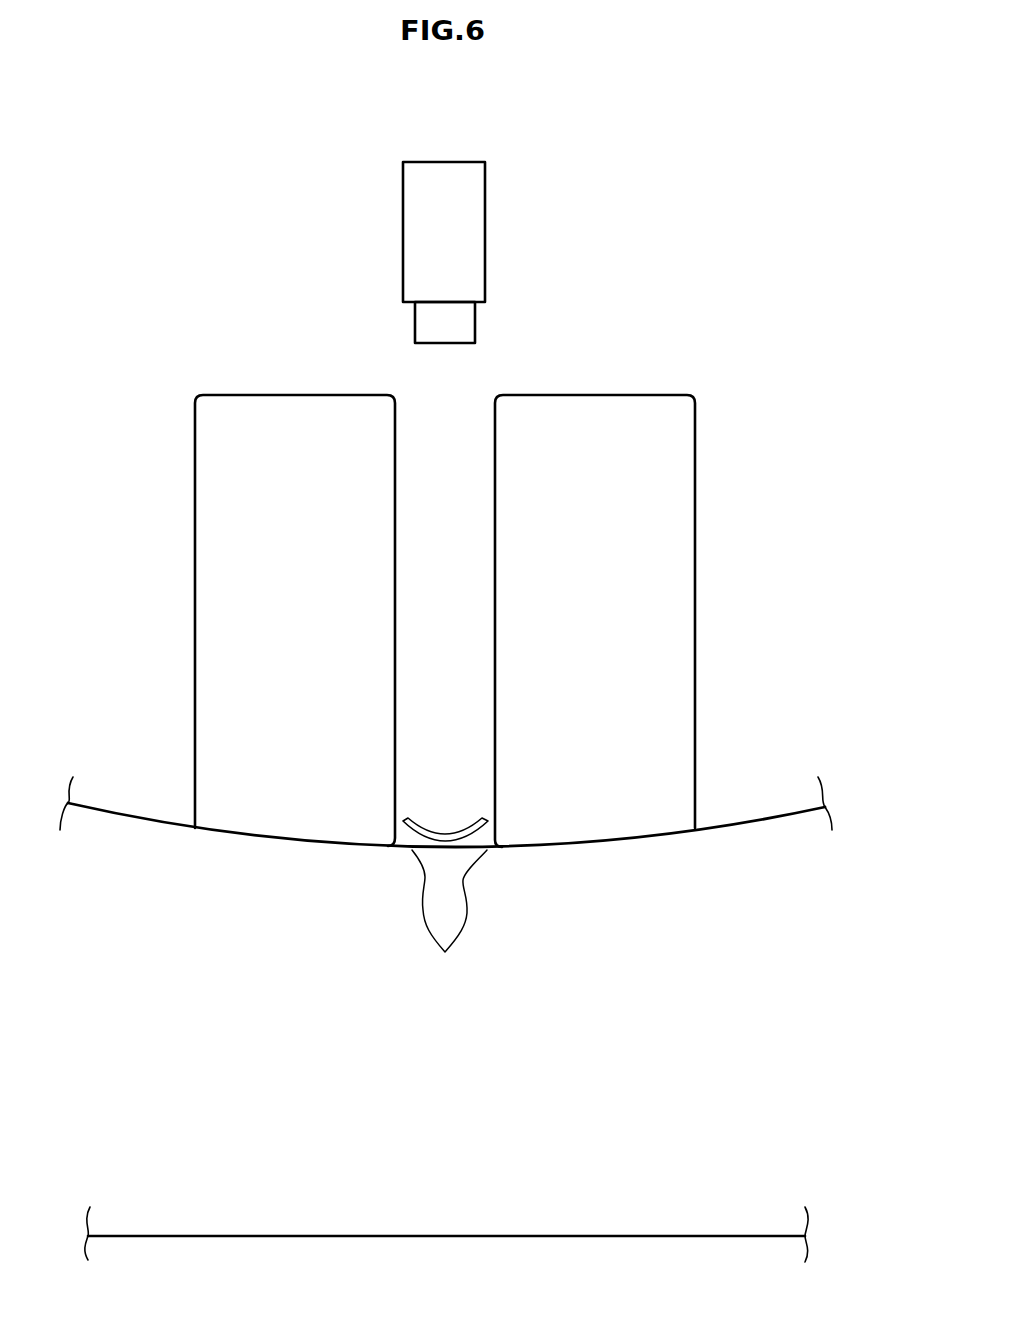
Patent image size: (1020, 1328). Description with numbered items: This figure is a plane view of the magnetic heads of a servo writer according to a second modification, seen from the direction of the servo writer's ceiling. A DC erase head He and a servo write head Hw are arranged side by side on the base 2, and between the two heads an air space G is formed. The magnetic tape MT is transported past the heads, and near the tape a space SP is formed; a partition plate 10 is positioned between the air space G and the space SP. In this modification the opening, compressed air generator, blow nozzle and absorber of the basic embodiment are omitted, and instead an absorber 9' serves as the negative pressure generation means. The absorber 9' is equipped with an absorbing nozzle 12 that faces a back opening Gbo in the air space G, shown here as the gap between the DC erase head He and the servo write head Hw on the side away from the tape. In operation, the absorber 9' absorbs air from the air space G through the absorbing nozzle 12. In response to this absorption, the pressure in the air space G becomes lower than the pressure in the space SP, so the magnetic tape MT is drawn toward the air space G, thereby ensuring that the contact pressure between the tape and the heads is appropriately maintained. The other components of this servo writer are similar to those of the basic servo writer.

The base 2 is at (433, 1208).
The absorber 9' is at (351, 232).
The partition plate 10 is at (474, 822).
The absorbing nozzle 12 is at (447, 322).
The DC erase head He is at (248, 395).
The servo write head Hw is at (605, 395).
The back opening Gbo is at (442, 410).
The air space G is at (460, 540).
The magnetic tape MT is at (707, 833).
The space SP is at (464, 915).